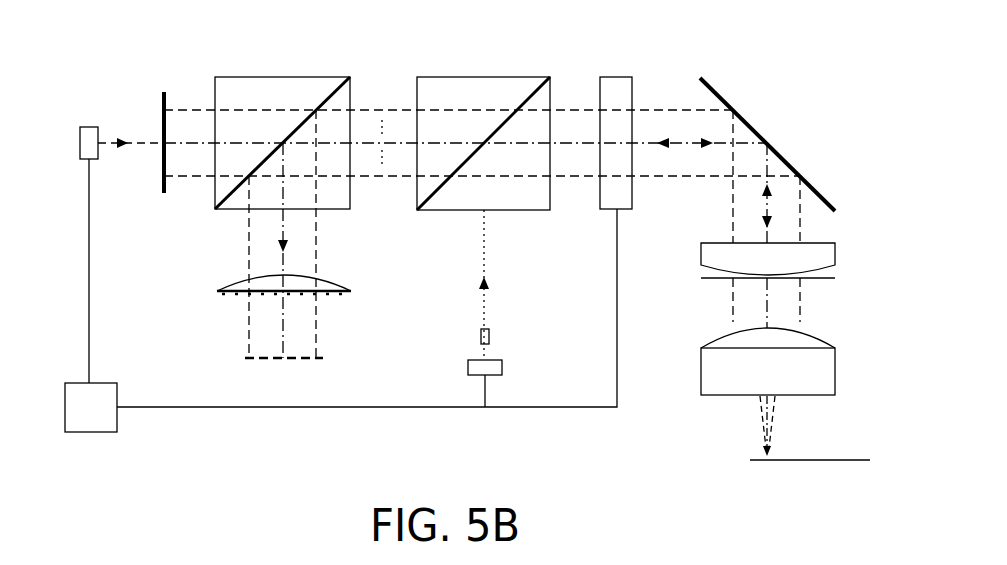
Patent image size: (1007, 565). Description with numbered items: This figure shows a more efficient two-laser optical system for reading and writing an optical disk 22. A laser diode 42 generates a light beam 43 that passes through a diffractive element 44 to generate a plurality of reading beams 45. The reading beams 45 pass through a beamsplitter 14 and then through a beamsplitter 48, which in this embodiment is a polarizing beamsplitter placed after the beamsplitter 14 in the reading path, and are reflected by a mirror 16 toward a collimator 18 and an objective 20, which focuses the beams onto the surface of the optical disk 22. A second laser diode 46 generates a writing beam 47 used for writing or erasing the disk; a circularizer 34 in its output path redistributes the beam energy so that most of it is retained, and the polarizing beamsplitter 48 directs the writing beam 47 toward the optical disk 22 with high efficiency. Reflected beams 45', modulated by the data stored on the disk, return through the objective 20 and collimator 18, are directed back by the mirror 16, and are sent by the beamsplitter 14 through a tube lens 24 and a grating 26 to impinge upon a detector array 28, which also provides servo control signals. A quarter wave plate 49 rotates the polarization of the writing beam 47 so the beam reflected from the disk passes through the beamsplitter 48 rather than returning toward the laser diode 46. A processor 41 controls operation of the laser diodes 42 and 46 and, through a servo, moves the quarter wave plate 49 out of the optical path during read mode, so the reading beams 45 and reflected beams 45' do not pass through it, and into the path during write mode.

The beamsplitter 14 is at (263, 76).
The mirror 16 is at (750, 118).
The collimator 18 is at (700, 262).
The objective 20 is at (720, 396).
The optical disk 22 is at (790, 462).
The tube lens 24 is at (233, 278).
The grating 26 is at (216, 292).
The detector array 28 is at (325, 355).
The circularizer 34 is at (478, 334).
The processor 41 is at (105, 435).
The laser diode 42 is at (79, 143).
The light beam 43 is at (135, 140).
The diffractive element 44 is at (162, 97).
The reading beams 45 is at (456, 134).
The reflected beams 45' is at (565, 195).
The laser diode 46 is at (505, 366).
The writing beam 47 is at (487, 260).
The polarizing beamsplitter 48 is at (476, 77).
The quarter wave plate 49 is at (618, 78).